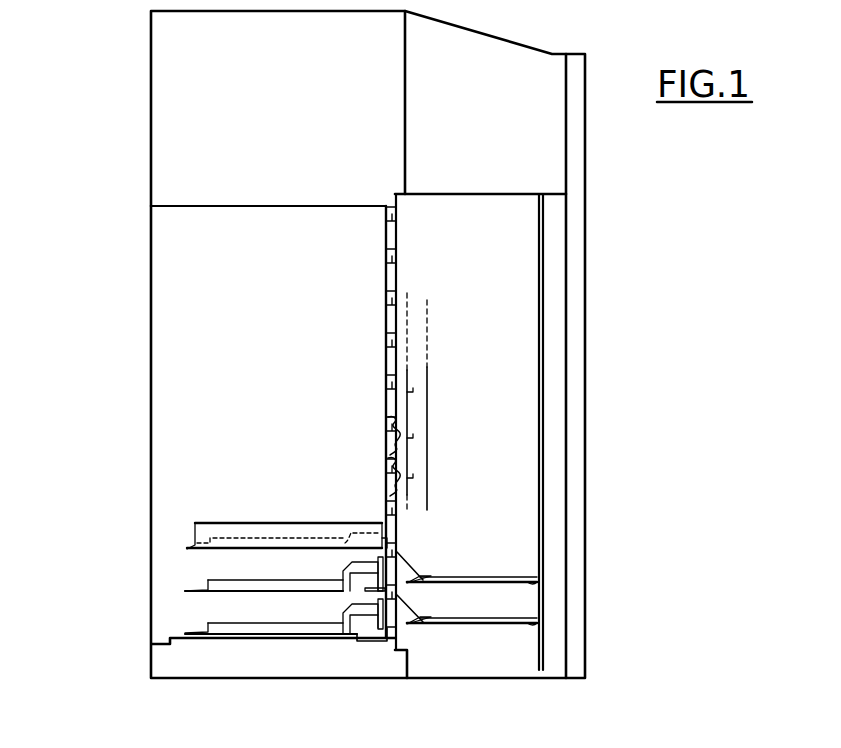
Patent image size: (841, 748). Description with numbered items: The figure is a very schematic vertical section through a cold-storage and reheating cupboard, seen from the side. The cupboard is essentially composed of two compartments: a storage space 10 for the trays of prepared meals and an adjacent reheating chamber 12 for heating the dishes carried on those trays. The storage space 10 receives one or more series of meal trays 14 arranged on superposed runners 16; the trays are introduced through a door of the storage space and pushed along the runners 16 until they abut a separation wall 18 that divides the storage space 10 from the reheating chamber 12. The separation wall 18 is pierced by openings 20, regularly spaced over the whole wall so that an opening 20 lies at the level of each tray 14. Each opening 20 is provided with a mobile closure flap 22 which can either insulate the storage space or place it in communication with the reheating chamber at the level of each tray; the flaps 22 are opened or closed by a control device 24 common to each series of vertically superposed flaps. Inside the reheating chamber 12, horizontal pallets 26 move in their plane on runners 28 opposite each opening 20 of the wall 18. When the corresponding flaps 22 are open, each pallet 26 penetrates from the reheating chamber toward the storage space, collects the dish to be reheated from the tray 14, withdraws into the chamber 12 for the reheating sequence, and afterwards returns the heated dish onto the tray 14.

The storage space 10 is at (270, 423).
The reheating chamber 12 is at (490, 423).
The meal tray 14 is at (238, 532).
The runners 16 is at (235, 628).
The separation wall 18 is at (382, 278).
The openings 20 is at (386, 324).
The mobile closure flap 22 is at (387, 418).
The control device 24 is at (425, 460).
The horizontal pallets 26 is at (470, 577).
The runners 28 is at (435, 578).